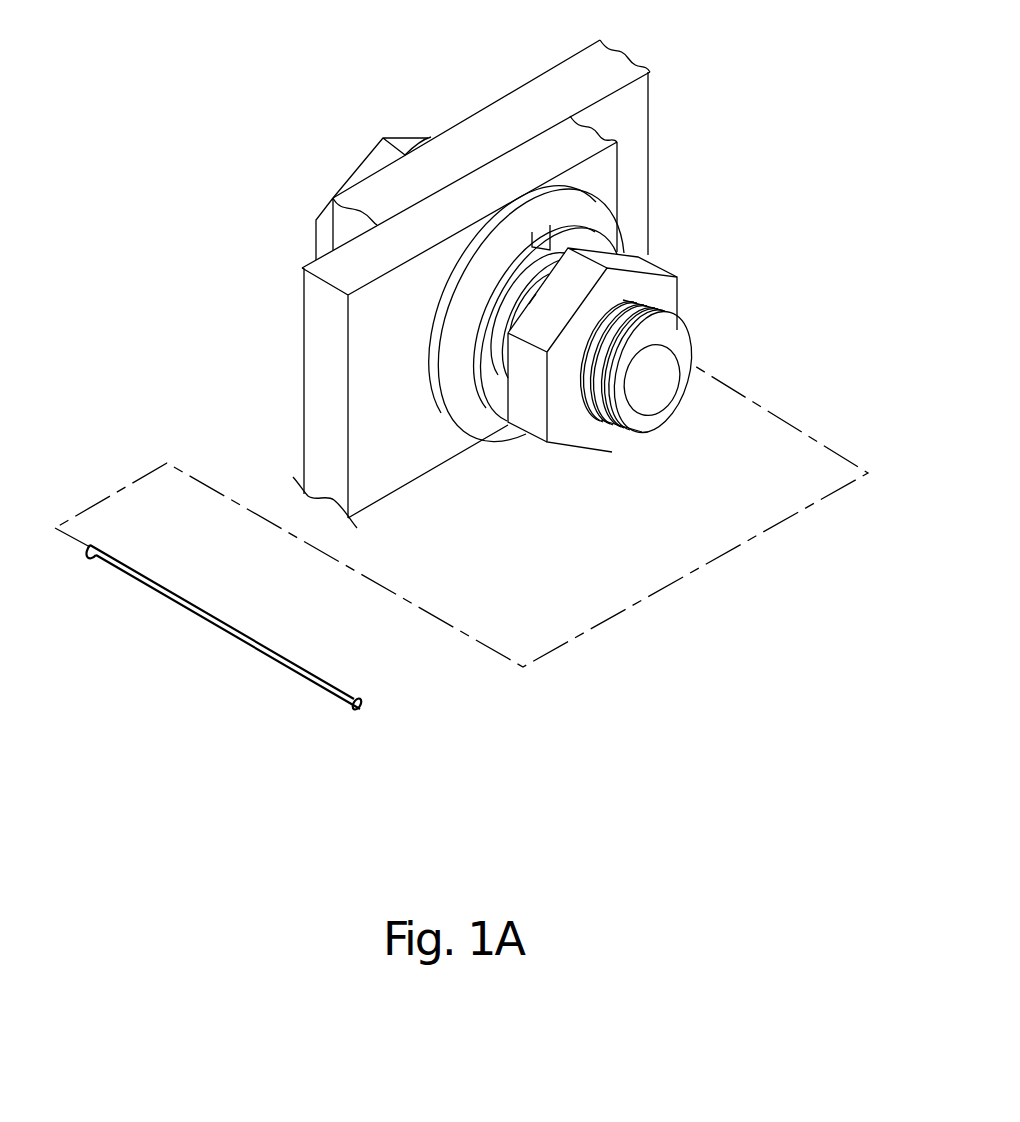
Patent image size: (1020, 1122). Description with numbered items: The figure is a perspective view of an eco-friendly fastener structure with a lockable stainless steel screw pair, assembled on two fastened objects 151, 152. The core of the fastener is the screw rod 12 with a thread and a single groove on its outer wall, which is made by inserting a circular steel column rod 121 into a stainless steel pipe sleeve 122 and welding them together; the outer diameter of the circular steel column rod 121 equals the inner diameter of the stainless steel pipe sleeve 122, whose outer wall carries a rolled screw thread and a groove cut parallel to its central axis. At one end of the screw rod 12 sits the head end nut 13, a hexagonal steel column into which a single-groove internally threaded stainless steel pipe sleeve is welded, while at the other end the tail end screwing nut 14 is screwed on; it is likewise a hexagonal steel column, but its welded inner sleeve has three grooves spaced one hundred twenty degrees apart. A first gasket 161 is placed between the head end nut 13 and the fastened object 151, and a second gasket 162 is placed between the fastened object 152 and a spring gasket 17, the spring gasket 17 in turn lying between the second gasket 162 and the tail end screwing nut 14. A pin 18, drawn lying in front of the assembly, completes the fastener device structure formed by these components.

The screw rod with a thread and a single groove on an outer wall 12 is at (577, 436).
The circular steel column rod 121 is at (670, 383).
The stainless steel pipe sleeve with a thread and a single groove on an outer wall 122 is at (623, 408).
The head end nut 13 is at (370, 165).
The tail end screwing nut 14 is at (537, 416).
The fastened object 151 is at (552, 87).
The fastened object 152 is at (313, 364).
The gasket 161 is at (428, 136).
The gasket 162 is at (578, 206).
The spring gasket 17 is at (582, 240).
The pin 18 is at (353, 698).